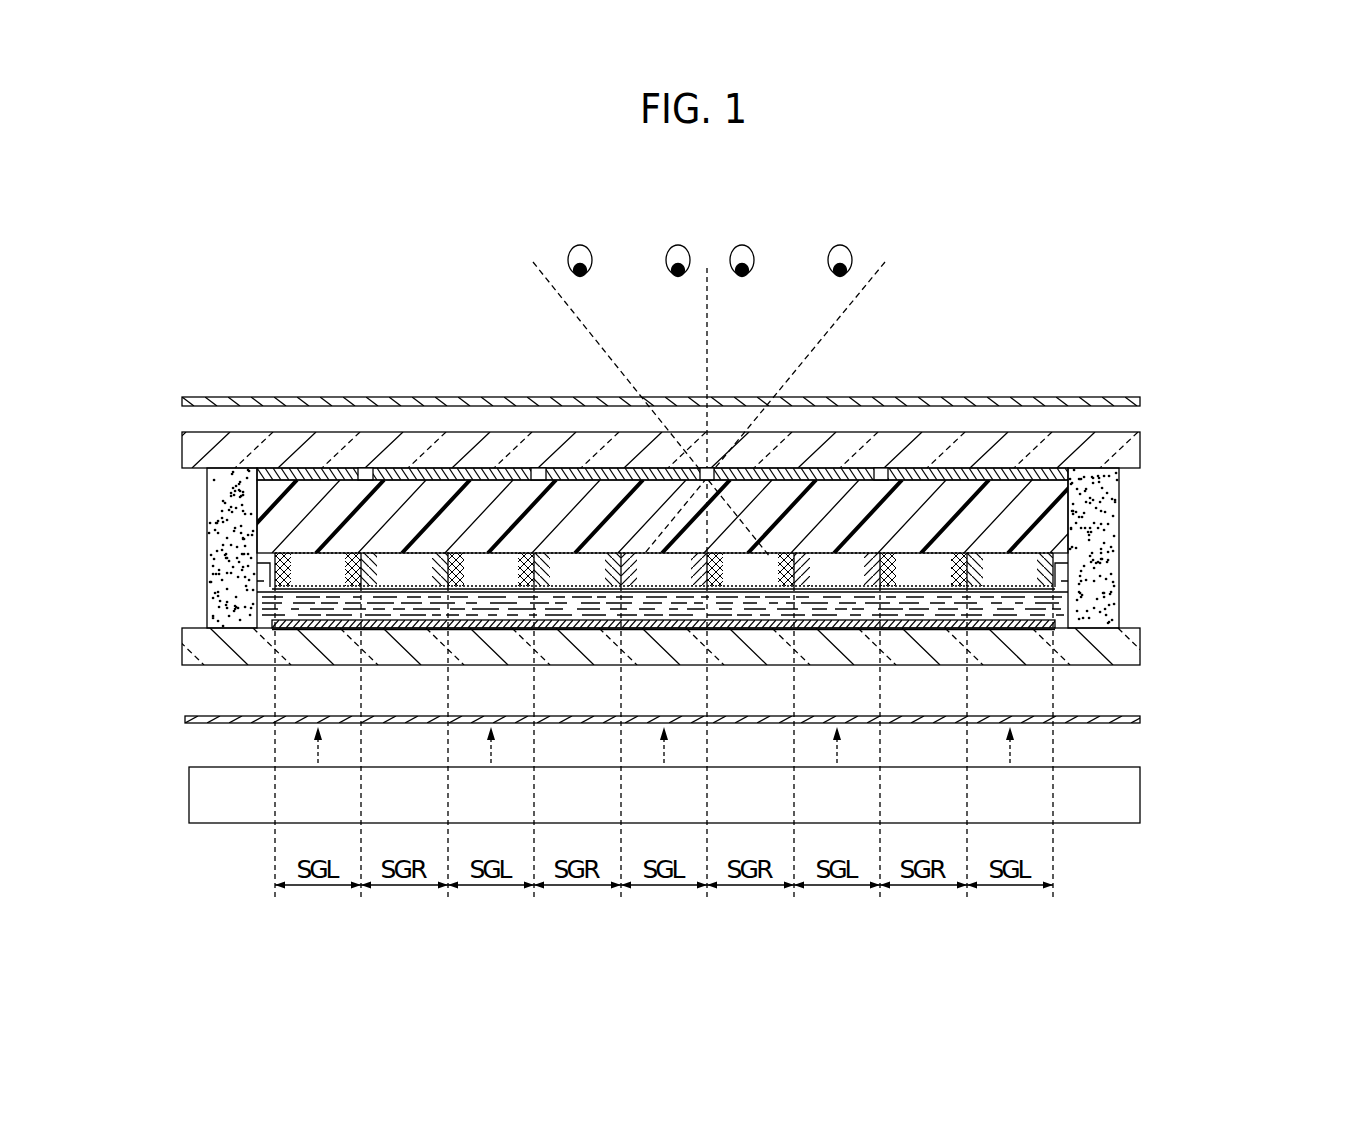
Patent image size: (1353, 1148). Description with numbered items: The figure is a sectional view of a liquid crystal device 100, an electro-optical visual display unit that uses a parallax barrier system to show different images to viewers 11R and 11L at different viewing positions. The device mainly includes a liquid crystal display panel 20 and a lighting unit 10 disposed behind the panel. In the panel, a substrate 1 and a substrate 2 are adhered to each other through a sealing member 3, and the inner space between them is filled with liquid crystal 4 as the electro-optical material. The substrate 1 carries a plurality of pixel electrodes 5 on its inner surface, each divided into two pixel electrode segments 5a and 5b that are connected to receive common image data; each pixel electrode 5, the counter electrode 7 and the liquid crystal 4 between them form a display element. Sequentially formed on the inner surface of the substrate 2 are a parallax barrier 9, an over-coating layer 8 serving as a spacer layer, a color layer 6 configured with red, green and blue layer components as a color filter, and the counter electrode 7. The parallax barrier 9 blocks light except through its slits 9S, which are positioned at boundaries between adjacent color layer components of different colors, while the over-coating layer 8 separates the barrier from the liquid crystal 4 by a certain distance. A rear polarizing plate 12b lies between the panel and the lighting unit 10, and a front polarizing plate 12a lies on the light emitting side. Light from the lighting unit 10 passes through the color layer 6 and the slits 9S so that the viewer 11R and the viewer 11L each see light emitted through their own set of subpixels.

The liquid crystal device 100 is at (794, 177).
The viewer 11L is at (651, 382).
The viewer 11R is at (765, 380).
The front polarizing plate 12a is at (183, 401).
The rear polarizing plate 12b is at (188, 718).
The substrate 2 is at (190, 455).
The substrate 1 is at (190, 653).
The sealing member 3 is at (217, 532).
The liquid crystal 4 is at (262, 600).
The liquid crystal display panel 20 is at (1295, 663).
The parallax barrier 9 is at (1063, 486).
The slit 9S is at (880, 483).
The over-coating layer 8 is at (1063, 532).
The color layer 6 is at (1050, 553).
The counter electrode 7 is at (1063, 573).
The pixel electrode 5 is at (1247, 603).
The pixel electrode segment 5a is at (777, 632).
The pixel electrode segment 5b is at (948, 631).
The lighting unit 10 is at (1140, 805).